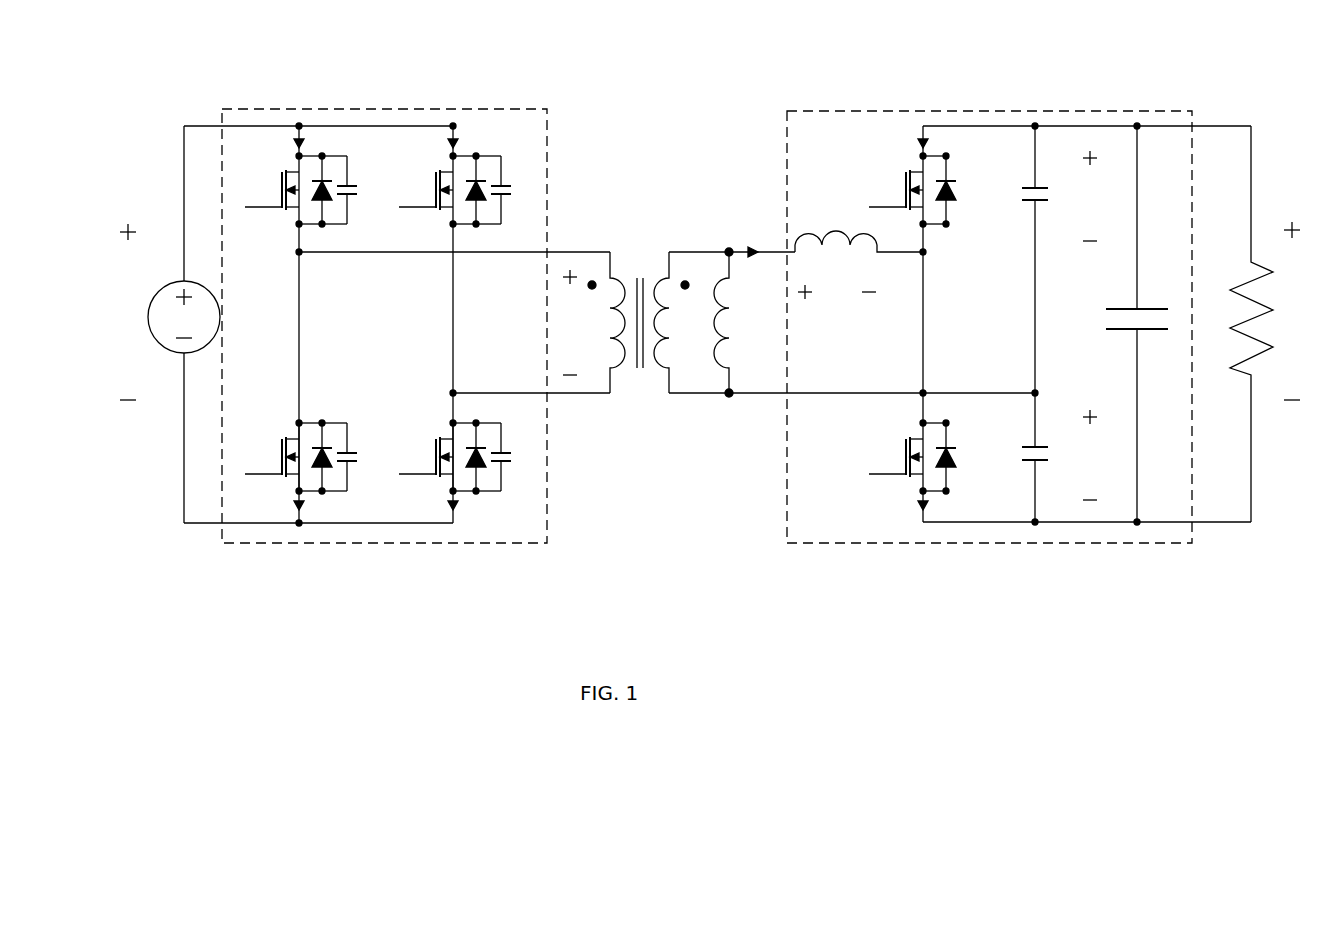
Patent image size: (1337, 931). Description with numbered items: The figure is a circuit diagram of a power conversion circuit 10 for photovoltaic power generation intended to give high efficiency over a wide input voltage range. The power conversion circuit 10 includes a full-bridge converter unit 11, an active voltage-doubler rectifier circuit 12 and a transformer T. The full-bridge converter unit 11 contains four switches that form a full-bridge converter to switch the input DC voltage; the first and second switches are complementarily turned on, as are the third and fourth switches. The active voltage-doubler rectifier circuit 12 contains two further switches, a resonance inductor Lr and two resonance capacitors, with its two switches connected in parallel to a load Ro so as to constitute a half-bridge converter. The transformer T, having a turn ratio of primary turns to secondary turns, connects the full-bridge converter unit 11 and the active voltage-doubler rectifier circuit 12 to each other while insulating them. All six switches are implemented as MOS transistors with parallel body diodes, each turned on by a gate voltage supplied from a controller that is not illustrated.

The power conversion circuit 10 is at (1242, 48).
The full-bridge converter unit 11 is at (382, 109).
The active voltage-doubler rectifier circuit 12 is at (985, 110).